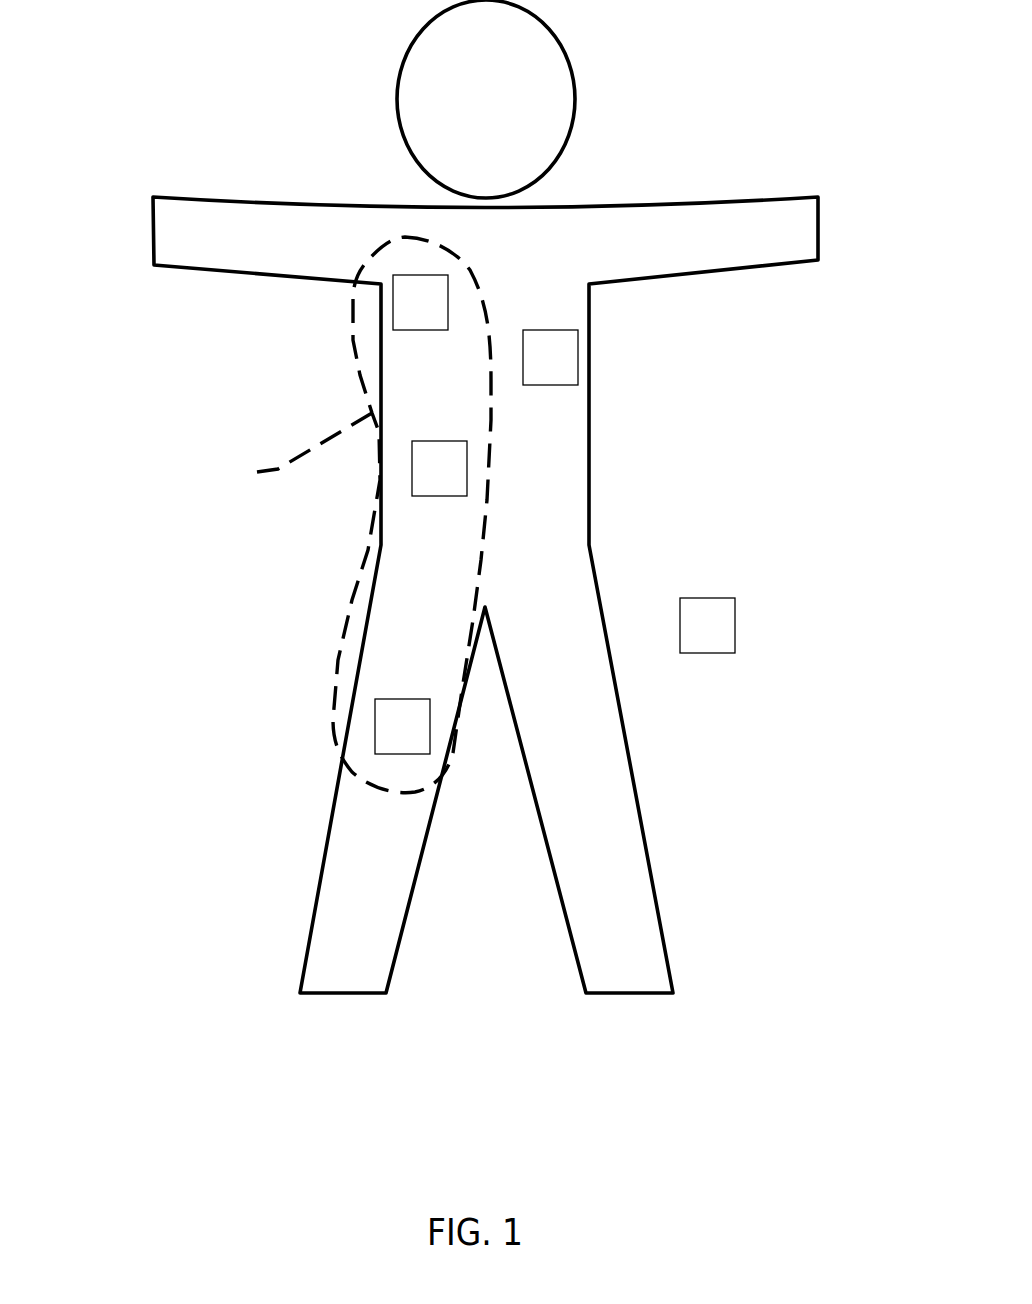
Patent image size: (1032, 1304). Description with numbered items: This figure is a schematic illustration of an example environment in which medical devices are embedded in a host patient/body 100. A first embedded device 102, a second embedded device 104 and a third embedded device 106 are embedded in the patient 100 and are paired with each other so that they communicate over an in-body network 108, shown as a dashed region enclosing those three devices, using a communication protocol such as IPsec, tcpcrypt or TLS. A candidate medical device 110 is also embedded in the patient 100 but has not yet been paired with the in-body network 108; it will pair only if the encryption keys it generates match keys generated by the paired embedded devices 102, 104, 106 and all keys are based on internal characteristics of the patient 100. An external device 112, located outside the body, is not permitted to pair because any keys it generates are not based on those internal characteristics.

The patient/body 100 is at (554, 983).
The first embedded device 102 is at (393, 302).
The second embedded device 104 is at (412, 468).
The third embedded device 106 is at (375, 725).
The in-body network 108 is at (350, 515).
The candidate medical device 110 is at (578, 358).
The external device 112 is at (735, 625).